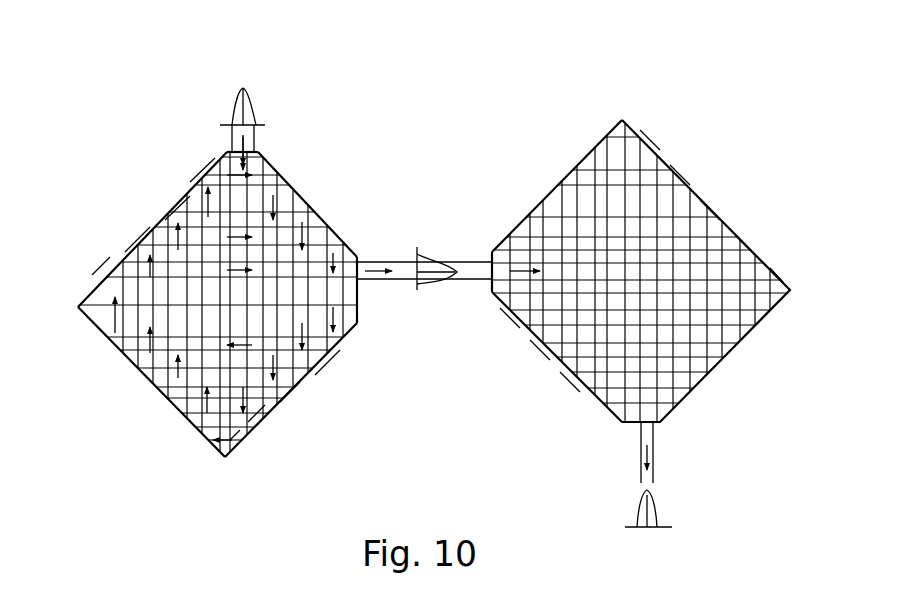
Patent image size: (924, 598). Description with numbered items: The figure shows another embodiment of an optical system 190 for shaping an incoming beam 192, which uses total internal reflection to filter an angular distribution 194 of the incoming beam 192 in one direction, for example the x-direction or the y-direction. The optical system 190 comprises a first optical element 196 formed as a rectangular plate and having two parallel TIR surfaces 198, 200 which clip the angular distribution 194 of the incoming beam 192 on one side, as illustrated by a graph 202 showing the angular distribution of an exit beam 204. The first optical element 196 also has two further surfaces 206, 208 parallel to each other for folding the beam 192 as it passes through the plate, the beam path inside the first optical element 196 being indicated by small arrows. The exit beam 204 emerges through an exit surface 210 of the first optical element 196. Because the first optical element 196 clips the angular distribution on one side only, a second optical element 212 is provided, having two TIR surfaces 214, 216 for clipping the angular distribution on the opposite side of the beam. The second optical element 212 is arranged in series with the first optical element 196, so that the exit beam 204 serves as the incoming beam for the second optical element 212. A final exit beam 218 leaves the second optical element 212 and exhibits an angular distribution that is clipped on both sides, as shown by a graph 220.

The optical system 190 is at (488, 163).
The incoming beam 192 is at (220, 137).
The angular distribution 194 is at (265, 110).
The first optical element 196 is at (133, 387).
The TIR surface 198 is at (262, 418).
The TIR surface 200 is at (97, 285).
The graph 202 is at (437, 251).
The exit beam 204 is at (400, 292).
The further surface 206 is at (303, 198).
The further surface 208 is at (173, 412).
The exit surface 210 is at (360, 300).
The second optical element 212 is at (737, 202).
The TIR surface 214 is at (580, 375).
The TIR surface 216 is at (637, 133).
The final exit beam 218 is at (667, 460).
The graph 220 is at (697, 523).